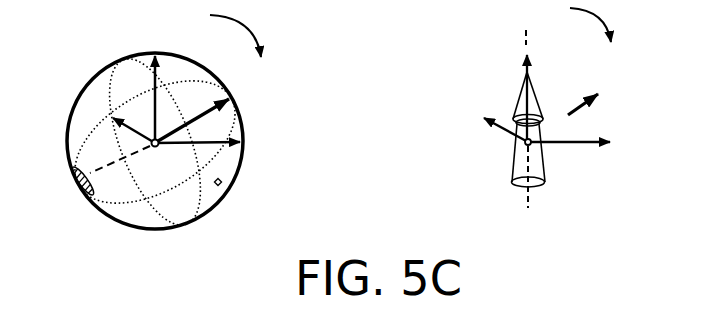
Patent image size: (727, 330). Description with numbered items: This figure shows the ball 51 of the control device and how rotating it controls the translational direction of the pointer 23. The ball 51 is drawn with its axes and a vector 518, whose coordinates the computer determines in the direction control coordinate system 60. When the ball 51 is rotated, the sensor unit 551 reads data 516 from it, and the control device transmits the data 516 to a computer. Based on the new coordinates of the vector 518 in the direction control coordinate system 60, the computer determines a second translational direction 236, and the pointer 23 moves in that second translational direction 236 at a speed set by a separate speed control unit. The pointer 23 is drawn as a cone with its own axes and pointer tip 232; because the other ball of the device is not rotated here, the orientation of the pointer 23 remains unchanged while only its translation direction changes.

The ball 51 is at (236, 161).
The vector 518 is at (197, 113).
The direction control coordinate system 60 is at (224, 133).
The data 516 is at (222, 181).
The sensor unit 551 is at (257, 193).
The pointer 23 is at (535, 158).
The pointer tip 232 is at (530, 72).
The second translational direction 236 is at (601, 92).